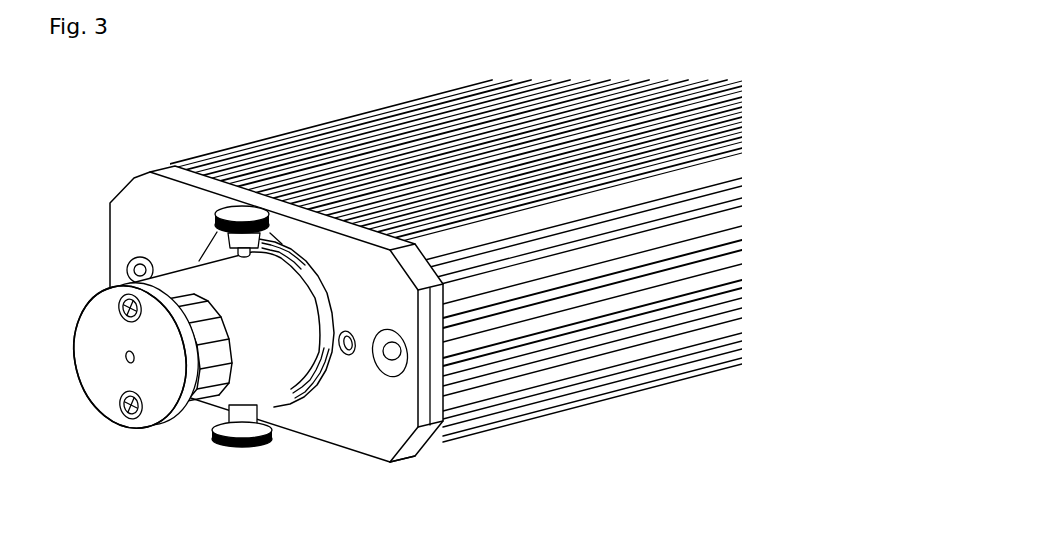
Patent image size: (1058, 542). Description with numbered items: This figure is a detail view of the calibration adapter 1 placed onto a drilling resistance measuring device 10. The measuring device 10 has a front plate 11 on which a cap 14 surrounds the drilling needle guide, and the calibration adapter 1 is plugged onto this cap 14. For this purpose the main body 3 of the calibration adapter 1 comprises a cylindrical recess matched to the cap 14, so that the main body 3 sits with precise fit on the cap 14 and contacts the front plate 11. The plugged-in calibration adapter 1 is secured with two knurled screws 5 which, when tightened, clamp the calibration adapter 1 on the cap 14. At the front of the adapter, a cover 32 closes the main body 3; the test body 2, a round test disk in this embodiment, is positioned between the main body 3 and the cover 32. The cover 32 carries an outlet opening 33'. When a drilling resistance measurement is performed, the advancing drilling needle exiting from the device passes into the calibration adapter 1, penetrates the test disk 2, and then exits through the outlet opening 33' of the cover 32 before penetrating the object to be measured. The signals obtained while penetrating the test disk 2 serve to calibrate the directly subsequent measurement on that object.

The calibration adapter 1 is at (92, 283).
The test body 2 is at (236, 352).
The main body 3 is at (196, 271).
The knurled screws 5 is at (247, 212).
The drilling resistance measuring device 10 is at (318, 124).
The front plate 11 is at (133, 193).
The cap 14 is at (328, 378).
The cover 32 is at (90, 313).
The outlet opening 33' is at (86, 365).